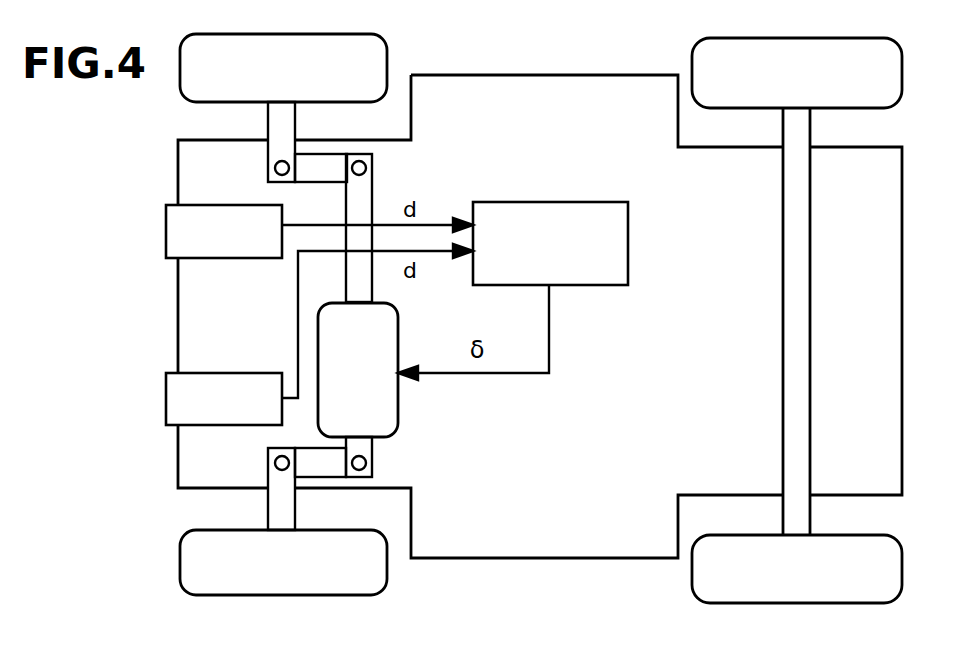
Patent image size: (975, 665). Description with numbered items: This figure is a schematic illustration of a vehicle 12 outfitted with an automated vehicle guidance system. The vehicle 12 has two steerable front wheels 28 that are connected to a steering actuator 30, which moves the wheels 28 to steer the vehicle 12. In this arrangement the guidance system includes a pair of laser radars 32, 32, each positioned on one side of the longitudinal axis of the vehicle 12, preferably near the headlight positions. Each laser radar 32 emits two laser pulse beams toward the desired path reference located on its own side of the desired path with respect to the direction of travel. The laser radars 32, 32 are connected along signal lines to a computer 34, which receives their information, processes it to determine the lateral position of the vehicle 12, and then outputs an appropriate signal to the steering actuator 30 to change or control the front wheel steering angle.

The vehicle 12 is at (552, 72).
The steerable front wheels 28 is at (388, 62).
The steering actuator 30 is at (398, 405).
The laser radar 32 is at (200, 203).
The computer 34 is at (545, 200).